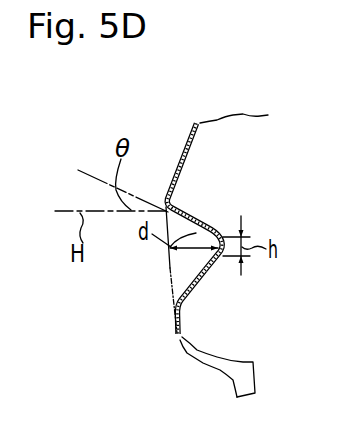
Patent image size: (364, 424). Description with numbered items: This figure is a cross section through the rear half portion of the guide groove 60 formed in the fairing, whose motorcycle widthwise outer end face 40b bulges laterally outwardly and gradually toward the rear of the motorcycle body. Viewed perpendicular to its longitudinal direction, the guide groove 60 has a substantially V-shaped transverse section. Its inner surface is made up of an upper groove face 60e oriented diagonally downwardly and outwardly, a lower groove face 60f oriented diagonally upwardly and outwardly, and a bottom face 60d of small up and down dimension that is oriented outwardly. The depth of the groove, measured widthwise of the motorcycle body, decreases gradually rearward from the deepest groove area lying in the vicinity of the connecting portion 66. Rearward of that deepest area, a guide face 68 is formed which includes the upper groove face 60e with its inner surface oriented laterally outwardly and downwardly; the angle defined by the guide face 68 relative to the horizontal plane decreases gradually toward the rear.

The upper groove face 60e is at (243, 175).
The guide face 68 is at (197, 214).
The bottom face 60d is at (216, 221).
The lower groove face 60f is at (204, 276).
The connecting portion 66 is at (145, 270).
The guide groove 60 is at (193, 261).
The motorcycle widthwise outer end face 40b is at (171, 311).